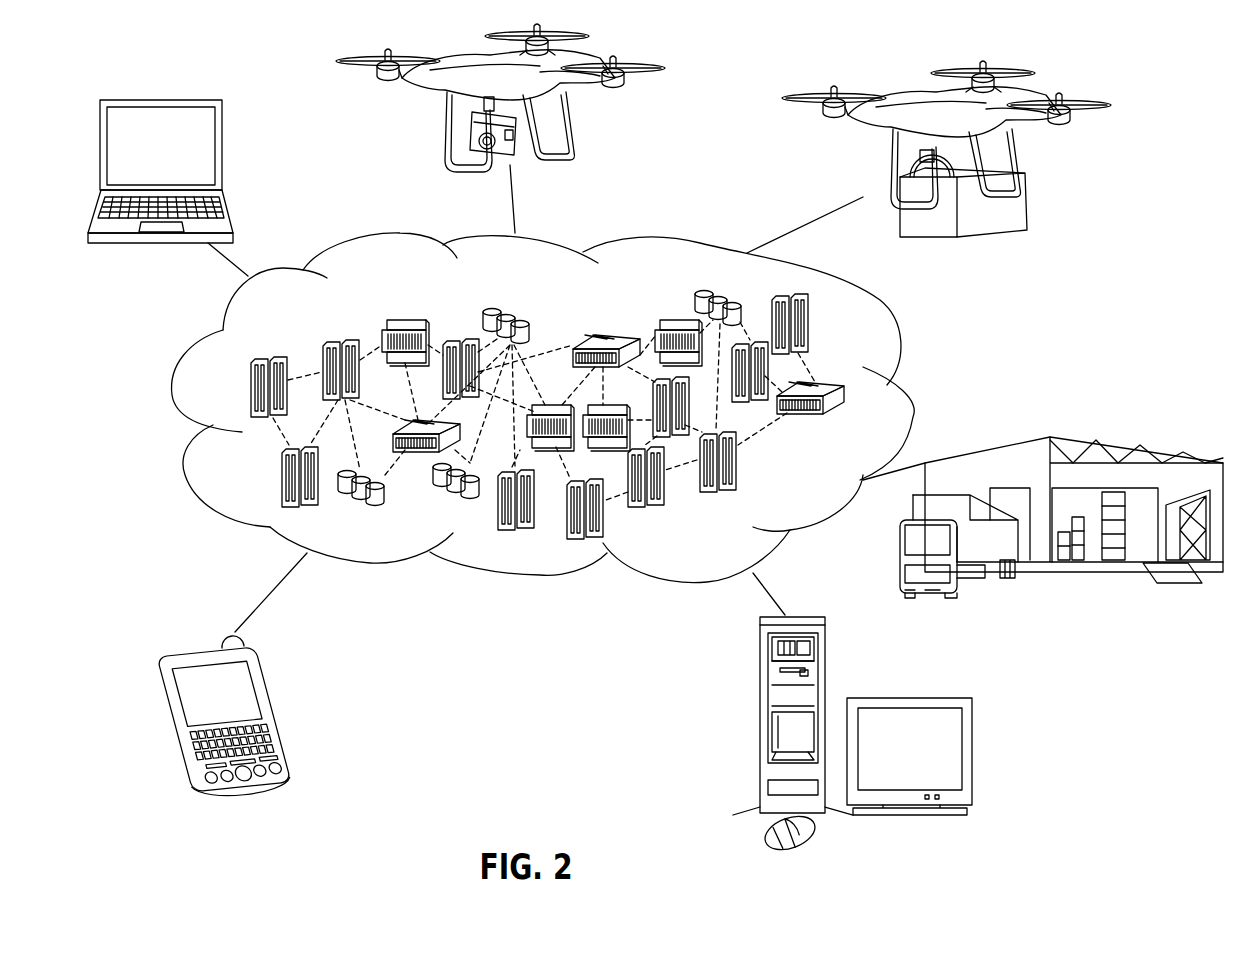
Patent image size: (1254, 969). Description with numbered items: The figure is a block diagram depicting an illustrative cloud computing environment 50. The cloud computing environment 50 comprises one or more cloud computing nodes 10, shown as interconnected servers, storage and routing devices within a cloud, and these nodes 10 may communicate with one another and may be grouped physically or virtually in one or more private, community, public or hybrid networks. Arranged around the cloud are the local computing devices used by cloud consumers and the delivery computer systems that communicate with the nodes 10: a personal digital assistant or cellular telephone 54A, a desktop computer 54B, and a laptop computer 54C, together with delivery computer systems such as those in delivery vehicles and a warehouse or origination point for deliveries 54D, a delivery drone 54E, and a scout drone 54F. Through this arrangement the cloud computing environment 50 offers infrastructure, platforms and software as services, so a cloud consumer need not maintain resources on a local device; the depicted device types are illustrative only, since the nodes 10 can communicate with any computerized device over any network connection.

The cloud computing node 10 is at (826, 485).
The cloud computing environment 50 is at (905, 397).
The personal digital assistant (PDA) or cellular telephone 54A is at (268, 681).
The desktop computer 54B is at (760, 668).
The laptop computer 54C is at (222, 133).
The delivery vehicles and/or warehouse 54D is at (1058, 572).
The delivery drone 54E is at (890, 165).
The scout drone 54F is at (441, 117).